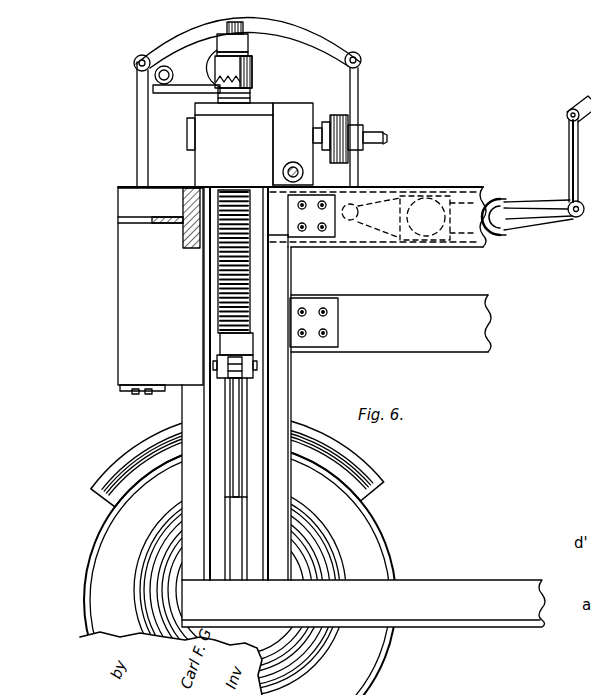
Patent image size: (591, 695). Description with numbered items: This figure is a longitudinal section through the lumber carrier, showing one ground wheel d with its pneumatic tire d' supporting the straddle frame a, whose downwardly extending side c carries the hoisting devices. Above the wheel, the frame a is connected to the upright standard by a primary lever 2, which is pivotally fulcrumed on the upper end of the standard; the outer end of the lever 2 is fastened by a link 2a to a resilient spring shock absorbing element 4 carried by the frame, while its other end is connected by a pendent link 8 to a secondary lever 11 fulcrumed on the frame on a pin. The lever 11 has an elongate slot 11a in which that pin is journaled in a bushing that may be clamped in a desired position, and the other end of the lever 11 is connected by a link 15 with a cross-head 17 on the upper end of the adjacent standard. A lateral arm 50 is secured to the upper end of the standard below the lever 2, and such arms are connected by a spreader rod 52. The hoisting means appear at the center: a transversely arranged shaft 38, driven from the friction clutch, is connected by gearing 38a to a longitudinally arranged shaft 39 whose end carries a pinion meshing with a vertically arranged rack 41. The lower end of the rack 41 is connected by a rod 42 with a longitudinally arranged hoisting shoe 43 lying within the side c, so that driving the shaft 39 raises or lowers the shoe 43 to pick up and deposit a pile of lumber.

The primary lever 2 is at (293, 33).
The link 2a is at (137, 127).
The resilient spring shock absorbing element 4 is at (117, 207).
The pendent link 8 is at (359, 98).
The secondary lever 11 is at (549, 222).
The elongate slot 11a is at (499, 224).
The link 15 is at (567, 160).
The cross-head 17 is at (586, 101).
The transversely arranged shaft 38 is at (304, 172).
The gearing 38a is at (295, 112).
The longitudinally arranged shaft 39 is at (388, 137).
The vertically arranged rack 41 is at (223, 303).
The rod 42 is at (236, 408).
The hoisting shoe 43 is at (462, 588).
The lateral arm 50 is at (190, 92).
The spreader rod 52 is at (155, 76).
The straddle frame a is at (493, 326).
The downwardly extending side c is at (182, 242).
The ground wheel d is at (251, 569).
The pneumatic tire d' is at (252, 467).